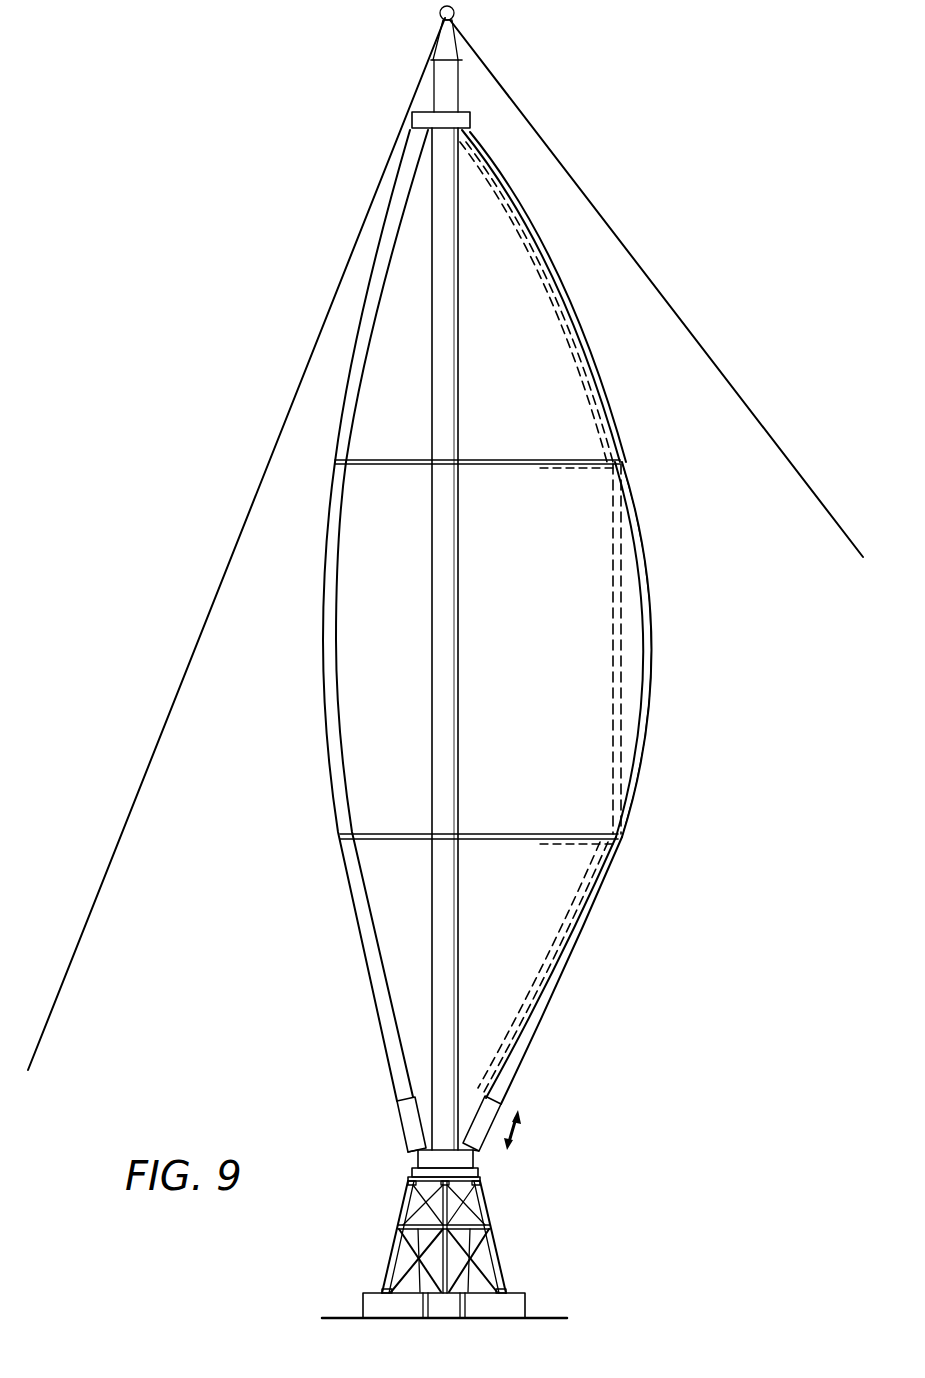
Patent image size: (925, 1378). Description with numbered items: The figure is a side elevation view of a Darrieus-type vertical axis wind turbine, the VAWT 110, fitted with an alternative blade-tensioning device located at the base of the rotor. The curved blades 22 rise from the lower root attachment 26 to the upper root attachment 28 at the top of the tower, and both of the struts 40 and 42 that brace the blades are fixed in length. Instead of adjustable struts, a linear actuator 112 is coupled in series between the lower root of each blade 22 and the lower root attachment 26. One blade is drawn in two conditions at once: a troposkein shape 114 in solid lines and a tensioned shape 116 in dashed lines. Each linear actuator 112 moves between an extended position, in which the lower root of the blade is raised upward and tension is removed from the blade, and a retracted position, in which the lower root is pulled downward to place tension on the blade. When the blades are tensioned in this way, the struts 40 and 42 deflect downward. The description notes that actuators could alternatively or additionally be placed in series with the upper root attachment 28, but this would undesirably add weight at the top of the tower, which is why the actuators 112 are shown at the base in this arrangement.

The VAWT 110 is at (656, 199).
The upper root attachment 28 is at (470, 120).
The lower root attachment 26 is at (478, 1168).
The blade 22 is at (330, 772).
The troposkein shape 114 is at (648, 585).
The tensioned shape 116 is at (613, 667).
The strut 42 is at (527, 460).
The strut 40 is at (575, 834).
The linear actuator 112 is at (400, 1115).